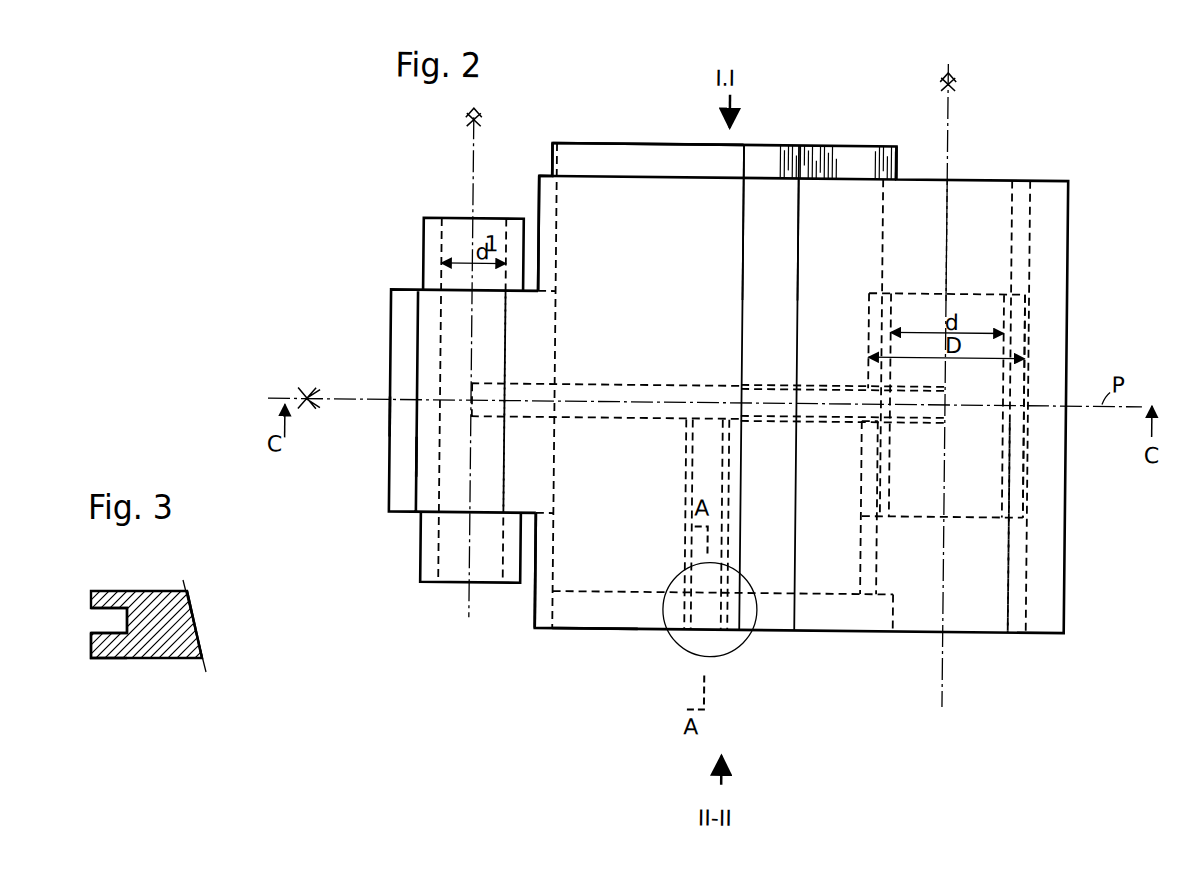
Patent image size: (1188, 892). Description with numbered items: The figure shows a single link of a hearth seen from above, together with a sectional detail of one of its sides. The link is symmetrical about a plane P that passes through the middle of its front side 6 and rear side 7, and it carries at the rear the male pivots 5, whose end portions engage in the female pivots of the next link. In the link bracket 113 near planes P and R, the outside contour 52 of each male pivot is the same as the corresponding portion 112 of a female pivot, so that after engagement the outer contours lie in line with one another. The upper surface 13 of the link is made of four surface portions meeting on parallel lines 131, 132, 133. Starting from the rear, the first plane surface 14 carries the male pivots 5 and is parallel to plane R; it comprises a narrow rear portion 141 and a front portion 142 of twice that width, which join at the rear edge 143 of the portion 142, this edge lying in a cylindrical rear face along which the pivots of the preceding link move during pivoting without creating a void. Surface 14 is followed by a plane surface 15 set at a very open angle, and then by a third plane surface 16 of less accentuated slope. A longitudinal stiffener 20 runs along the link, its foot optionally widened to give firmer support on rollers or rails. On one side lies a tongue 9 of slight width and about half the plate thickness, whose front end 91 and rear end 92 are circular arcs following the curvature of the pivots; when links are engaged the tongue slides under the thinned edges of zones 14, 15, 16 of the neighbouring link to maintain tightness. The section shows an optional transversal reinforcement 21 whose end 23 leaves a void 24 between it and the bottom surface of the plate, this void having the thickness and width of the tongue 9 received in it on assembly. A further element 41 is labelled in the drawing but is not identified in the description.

In FIG. 2, the rear male pivots 5 is at (514, 226).
In FIG. 2, the front side 6 is at (1068, 332).
In FIG. 2, the rear side 7 is at (390, 331).
In FIG. 2, the tongue 9 is at (643, 161).
In FIG. 2, the upper surface 13 is at (607, 208).
In FIG. 2, the first plane surface 14 is at (604, 579).
In FIG. 3, the first plane surface 14 is at (136, 591).
In FIG. 2, the second plane surface 15 is at (790, 227).
In FIG. 2, the third plane surface 16 is at (849, 577).
In FIG. 2, the longitudinal stiffener 20 is at (640, 386).
In FIG. 2, the transversal reinforcement 21 is at (700, 484).
In FIG. 3, the transversal reinforcement 21 is at (165, 655).
In FIG. 3, the end of the transversal reinforcement 23 is at (100, 642).
In FIG. 3, the void 24 is at (97, 617).
In FIG. 2, the end portion 41 is at (984, 621).
In FIG. 2, the outside contour of the male pivot 52 is at (388, 457).
In FIG. 2, the front end of the tongue 91 is at (898, 166).
In FIG. 2, the rear end of the tongue 92 is at (550, 162).
In FIG. 2, the corresponding portion of the female pivot 112 is at (1025, 450).
In FIG. 2, the link bracket 113 is at (389, 417).
In FIG. 2, the intersection line 131 is at (745, 199).
In FIG. 2, the intersection line 132 is at (795, 267).
In FIG. 2, the intersection line 133 is at (950, 206).
In FIG. 2, the rear portion of surface 14 141 is at (505, 465).
In FIG. 2, the front portion of surface 14 142 is at (577, 580).
In FIG. 2, the rear edge of portion 142 143 is at (534, 597).